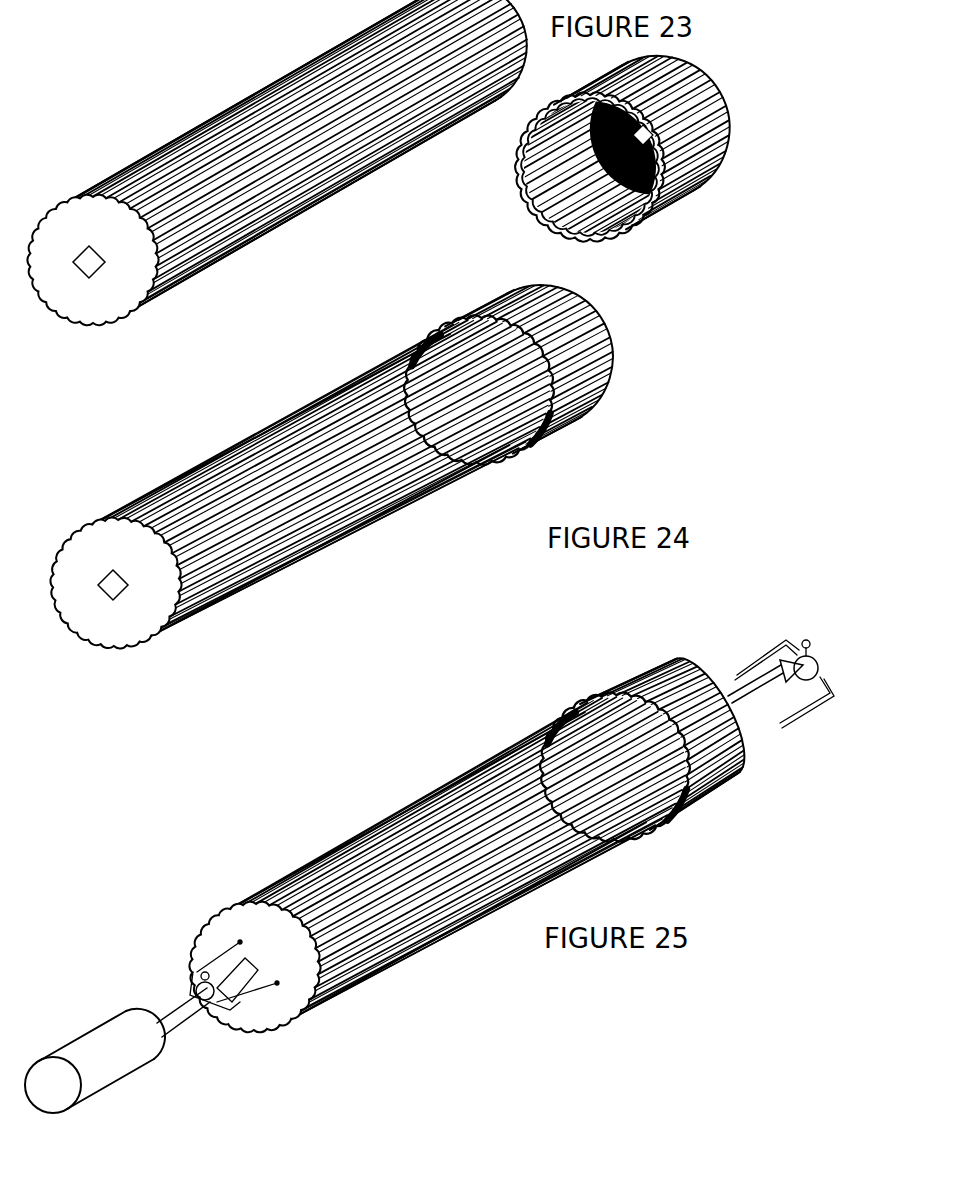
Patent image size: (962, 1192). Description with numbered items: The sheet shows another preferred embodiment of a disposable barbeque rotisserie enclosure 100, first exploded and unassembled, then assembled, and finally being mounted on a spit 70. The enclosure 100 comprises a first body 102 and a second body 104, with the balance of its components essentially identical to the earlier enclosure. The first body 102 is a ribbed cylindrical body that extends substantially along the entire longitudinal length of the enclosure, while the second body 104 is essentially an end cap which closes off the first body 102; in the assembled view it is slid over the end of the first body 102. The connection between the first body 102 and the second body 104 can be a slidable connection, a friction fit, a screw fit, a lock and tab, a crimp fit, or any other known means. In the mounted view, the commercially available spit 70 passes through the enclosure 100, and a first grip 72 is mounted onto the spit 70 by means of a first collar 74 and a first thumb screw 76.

In FIG. 23, the disposable barbeque rotisserie enclosure 100 is at (420, 174).
In FIG. 25, the disposable barbeque rotisserie enclosure 100 is at (434, 850).
In FIG. 23, the first body 102 is at (283, 81).
In FIG. 24, the first body 102 is at (200, 475).
In FIG. 25, the first body 102 is at (412, 812).
In FIG. 23, the second body 104 is at (688, 191).
In FIG. 24, the second body 104 is at (482, 307).
In FIG. 25, the second body 104 is at (647, 667).
In FIG. 25, the spit 70 is at (177, 1008).
In FIG. 25, the first grip 72 is at (813, 713).
In FIG. 25, the first collar 74 is at (820, 653).
In FIG. 25, the first thumb screw 76 is at (768, 655).